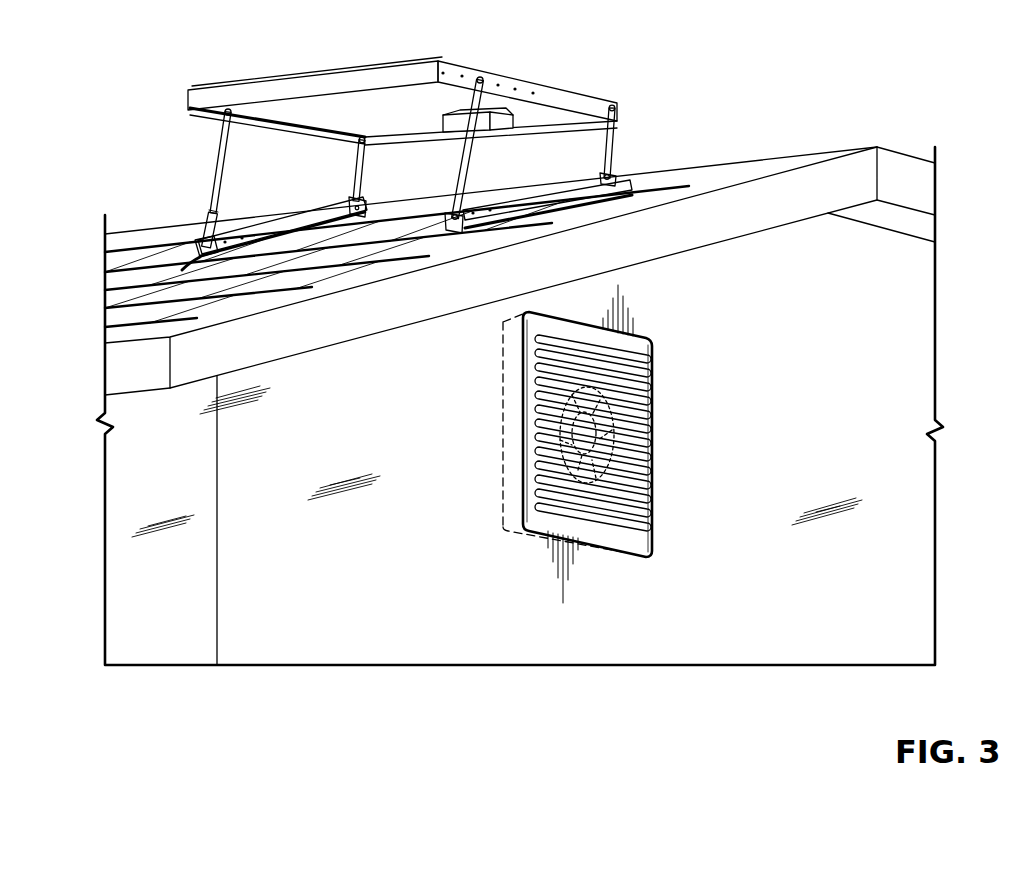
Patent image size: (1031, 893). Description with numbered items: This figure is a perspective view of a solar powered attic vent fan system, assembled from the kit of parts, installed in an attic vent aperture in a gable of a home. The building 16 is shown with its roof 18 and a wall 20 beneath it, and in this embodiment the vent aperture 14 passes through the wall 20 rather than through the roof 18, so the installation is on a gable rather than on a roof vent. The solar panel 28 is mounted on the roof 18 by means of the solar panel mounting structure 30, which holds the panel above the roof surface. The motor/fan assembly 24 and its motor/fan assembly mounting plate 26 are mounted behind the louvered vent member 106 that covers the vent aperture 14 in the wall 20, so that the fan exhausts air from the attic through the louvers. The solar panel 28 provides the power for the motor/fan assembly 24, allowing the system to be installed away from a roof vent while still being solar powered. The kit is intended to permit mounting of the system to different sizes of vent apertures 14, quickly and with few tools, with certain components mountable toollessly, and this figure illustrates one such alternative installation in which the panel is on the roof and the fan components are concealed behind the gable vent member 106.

The vent aperture 14 is at (632, 502).
The building 16 is at (827, 80).
The roof 18 is at (738, 178).
The wall 20 is at (829, 395).
The motor/fan assembly 24 is at (582, 477).
The motor/fan assembly mounting plate 26 is at (608, 558).
The solar panel 28 is at (440, 146).
The solar panel mounting structure 30 is at (465, 178).
The louvered vent member 106 is at (540, 525).